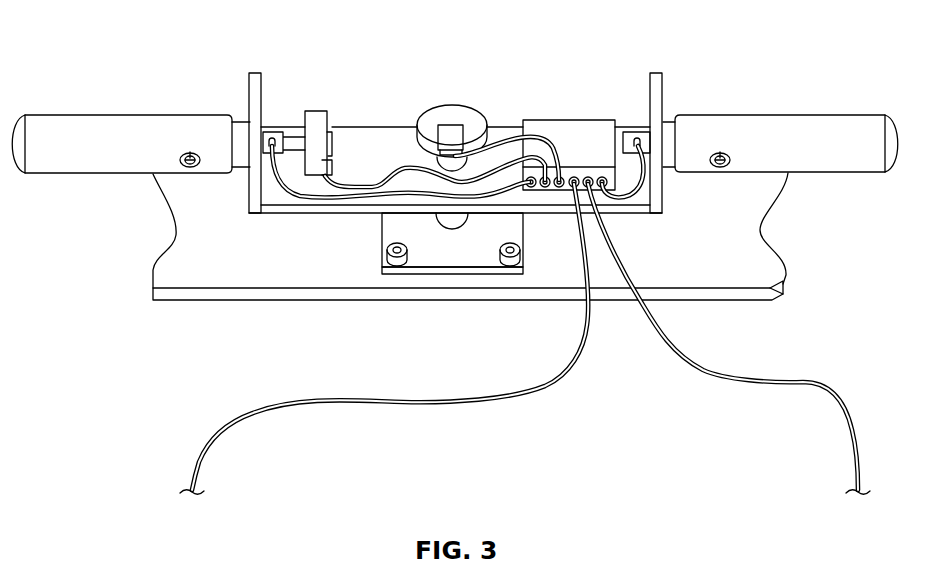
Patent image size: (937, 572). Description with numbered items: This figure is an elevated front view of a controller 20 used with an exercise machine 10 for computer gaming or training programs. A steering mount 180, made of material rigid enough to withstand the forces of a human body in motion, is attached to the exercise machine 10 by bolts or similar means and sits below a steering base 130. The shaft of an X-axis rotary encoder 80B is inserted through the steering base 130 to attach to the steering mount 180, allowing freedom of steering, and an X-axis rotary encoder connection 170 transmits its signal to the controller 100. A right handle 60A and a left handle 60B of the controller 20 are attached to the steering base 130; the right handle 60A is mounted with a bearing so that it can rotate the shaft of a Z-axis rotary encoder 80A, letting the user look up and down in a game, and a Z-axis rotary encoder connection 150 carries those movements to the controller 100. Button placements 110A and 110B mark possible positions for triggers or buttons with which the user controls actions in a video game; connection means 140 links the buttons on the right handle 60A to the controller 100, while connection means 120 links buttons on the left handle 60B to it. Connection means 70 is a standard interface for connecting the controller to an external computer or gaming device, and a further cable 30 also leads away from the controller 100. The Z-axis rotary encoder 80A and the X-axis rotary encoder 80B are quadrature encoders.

The controller 20 is at (103, 44).
The exercise machine 10 is at (768, 265).
The cable 30 is at (490, 396).
The connection means 70 is at (805, 381).
The right handle 60A is at (78, 130).
The left handle 60B is at (828, 128).
The Z-axis rotary encoder 80A is at (318, 120).
The X-axis rotary encoder 80B is at (450, 113).
The controller 100 is at (583, 133).
The trigger or button placement 110A is at (188, 153).
The trigger or button placement 110B is at (722, 153).
The connection means 120 is at (645, 178).
The steering base 130 is at (380, 135).
The connection means 140 is at (298, 200).
The Z-axis rotary encoder connection 150 is at (372, 190).
The X-axis rotary encoder connection 170 is at (535, 128).
The steering mount 180 is at (432, 243).